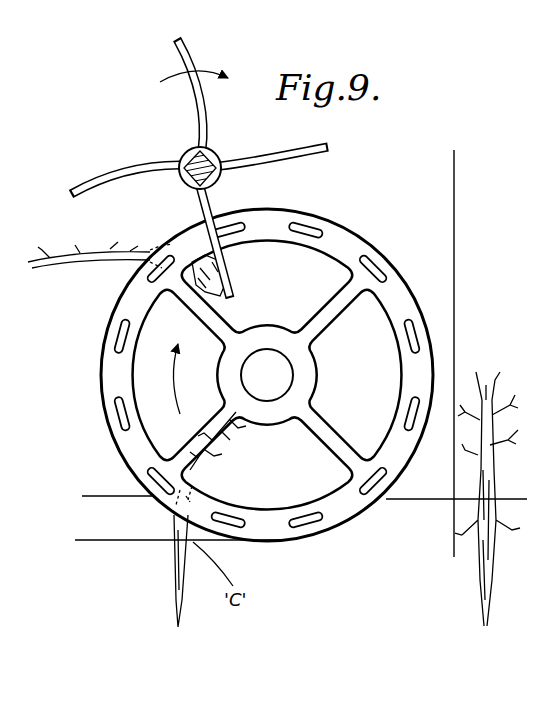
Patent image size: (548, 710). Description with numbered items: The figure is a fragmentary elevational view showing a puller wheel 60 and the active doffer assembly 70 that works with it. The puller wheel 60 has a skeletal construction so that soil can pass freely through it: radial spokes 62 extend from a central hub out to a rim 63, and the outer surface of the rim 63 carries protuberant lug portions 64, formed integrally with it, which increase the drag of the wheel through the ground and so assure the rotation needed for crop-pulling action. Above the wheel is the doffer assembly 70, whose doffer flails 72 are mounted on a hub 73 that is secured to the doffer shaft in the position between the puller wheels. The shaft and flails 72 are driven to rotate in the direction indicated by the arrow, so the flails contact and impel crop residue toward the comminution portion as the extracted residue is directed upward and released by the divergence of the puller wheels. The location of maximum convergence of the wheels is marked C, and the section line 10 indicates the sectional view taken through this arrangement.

The section line 10 is at (430, 190).
The puller wheel 60 is at (251, 370).
The radial spokes 62 is at (318, 310).
The rim 63 is at (359, 241).
The protuberant lug portions 64 is at (118, 386).
The active doffer assembly 70 is at (215, 168).
The doffer flails 72 is at (177, 49).
The hub 73 is at (220, 155).